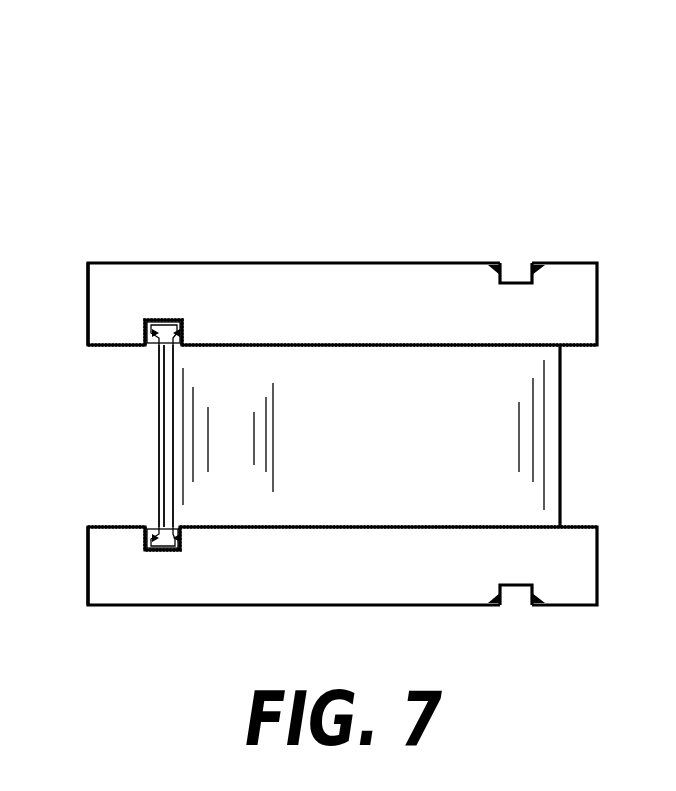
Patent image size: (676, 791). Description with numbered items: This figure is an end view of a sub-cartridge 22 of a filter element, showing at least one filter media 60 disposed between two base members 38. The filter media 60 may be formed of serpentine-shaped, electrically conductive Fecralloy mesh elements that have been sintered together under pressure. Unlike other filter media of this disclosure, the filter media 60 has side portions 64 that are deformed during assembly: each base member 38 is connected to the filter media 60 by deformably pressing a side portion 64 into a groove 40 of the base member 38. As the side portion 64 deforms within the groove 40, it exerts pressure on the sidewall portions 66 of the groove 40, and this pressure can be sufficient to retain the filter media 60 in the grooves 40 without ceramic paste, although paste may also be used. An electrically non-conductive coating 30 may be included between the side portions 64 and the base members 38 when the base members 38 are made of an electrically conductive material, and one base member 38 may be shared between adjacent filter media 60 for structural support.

The sub-cartridge 22 is at (119, 124).
The electrically non-conductive coating 30 is at (88, 345).
The base member 38 is at (370, 318).
The groove 40 is at (168, 278).
The filter media 60 is at (373, 462).
The side portion 64 is at (153, 322).
The sidewall portion 66 is at (180, 320).